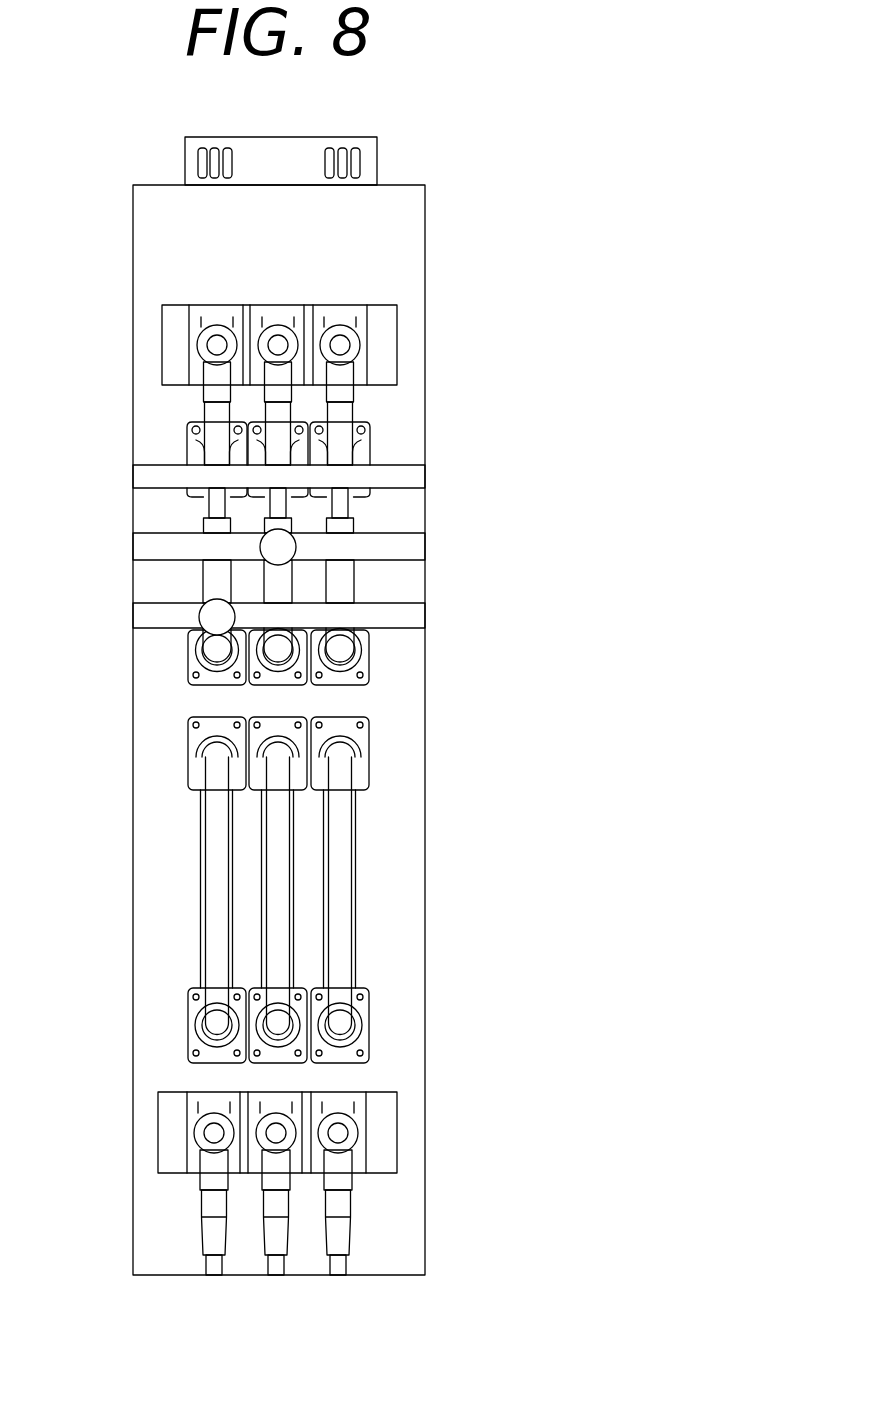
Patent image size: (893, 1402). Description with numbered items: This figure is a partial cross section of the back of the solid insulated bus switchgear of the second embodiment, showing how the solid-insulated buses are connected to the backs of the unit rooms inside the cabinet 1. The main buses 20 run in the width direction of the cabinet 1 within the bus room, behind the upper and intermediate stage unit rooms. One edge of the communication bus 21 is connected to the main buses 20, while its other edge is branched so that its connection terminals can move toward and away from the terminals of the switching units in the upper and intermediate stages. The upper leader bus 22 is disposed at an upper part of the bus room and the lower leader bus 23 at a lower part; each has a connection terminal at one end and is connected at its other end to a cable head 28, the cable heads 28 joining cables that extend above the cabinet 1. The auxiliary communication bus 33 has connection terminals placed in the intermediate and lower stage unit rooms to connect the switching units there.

The cabinet 1 is at (425, 188).
The main buses 20 is at (407, 477).
The communication bus 21 is at (218, 581).
The upper leader bus 22 is at (353, 330).
The lower leader bus 23 is at (353, 1117).
The cable head 28 is at (345, 415).
The auxiliary communication bus 33 is at (213, 880).